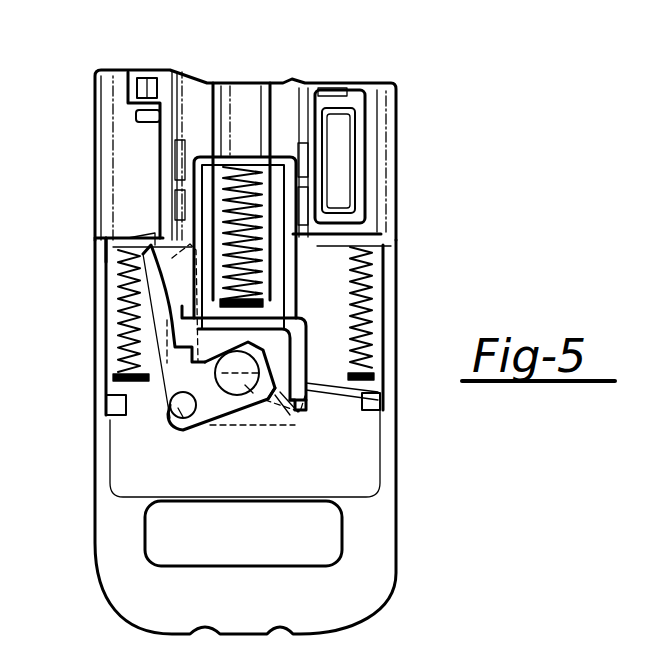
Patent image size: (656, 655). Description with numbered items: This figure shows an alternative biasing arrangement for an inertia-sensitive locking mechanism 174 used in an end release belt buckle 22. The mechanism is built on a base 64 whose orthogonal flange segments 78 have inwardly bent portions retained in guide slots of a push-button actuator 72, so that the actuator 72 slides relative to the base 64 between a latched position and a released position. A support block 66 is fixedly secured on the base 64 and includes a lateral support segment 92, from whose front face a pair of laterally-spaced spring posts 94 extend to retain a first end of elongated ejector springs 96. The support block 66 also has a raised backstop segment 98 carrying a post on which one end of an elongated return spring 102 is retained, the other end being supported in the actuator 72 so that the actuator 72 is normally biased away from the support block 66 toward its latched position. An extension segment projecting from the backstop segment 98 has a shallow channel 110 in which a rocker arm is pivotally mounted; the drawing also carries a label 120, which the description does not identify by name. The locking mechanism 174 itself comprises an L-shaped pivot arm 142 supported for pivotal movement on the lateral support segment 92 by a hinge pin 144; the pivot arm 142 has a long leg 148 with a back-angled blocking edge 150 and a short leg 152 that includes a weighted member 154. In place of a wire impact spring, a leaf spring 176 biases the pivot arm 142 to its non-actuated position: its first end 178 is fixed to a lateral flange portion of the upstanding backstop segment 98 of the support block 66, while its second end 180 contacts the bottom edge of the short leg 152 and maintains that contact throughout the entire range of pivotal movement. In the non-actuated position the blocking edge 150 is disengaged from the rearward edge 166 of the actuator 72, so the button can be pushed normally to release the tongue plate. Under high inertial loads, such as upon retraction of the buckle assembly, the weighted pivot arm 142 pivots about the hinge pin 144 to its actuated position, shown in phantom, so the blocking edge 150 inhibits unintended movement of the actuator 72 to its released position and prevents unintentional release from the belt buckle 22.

The belt buckle 22 is at (418, 165).
The base 64 is at (402, 575).
The support block 66 is at (386, 480).
The push-button actuator 72 is at (368, 137).
The orthogonal flange segments 78 is at (113, 133).
The lateral support segment 92 is at (387, 508).
The spring posts 94 is at (372, 343).
The ejector springs 96 is at (300, 318).
The backstop segment 98 is at (315, 396).
The return spring 102 is at (242, 163).
The channel 110 is at (260, 287).
The plunger 120 is at (247, 260).
The pivot arm 142 is at (187, 367).
The hinge pin 144 is at (180, 420).
The long leg 148 is at (157, 333).
The blocking edge 150 is at (112, 257).
The short leg 152 is at (211, 403).
The weighted member 154 is at (267, 410).
The rearward edge 166 is at (123, 243).
The inertia-sensitive locking mechanism 174 is at (233, 428).
The leaf spring 176 is at (315, 412).
The first end 178 is at (318, 400).
The second end 180 is at (278, 392).